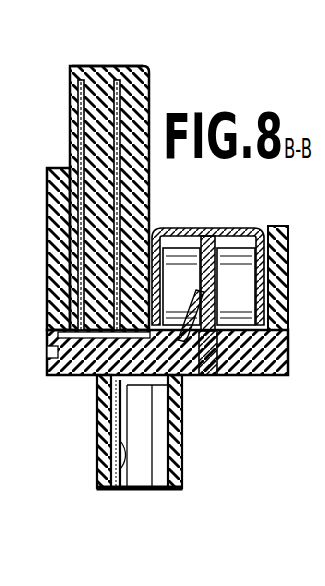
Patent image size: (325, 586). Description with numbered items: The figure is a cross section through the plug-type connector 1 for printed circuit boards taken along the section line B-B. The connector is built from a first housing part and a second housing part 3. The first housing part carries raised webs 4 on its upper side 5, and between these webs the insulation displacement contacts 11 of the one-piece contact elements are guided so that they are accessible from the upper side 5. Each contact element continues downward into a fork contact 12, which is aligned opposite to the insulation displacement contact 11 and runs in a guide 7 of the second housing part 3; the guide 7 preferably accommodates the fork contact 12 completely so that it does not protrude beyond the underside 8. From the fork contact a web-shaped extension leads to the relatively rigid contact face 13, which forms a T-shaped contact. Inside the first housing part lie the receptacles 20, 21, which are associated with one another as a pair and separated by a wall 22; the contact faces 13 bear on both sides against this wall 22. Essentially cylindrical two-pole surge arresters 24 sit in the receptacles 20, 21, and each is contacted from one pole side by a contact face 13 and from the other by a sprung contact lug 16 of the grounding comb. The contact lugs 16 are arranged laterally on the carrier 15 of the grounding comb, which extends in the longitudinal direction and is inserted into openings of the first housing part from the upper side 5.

The plug-type connector 1 is at (40, 214).
The second housing part 3 is at (98, 437).
The raised webs 4 is at (149, 110).
The upper side 5 is at (100, 66).
The guides 7 is at (183, 476).
The underside 8 is at (152, 491).
The insulation displacement contact 11 is at (114, 152).
The fork contact 12 is at (126, 455).
The contact face 13 is at (184, 377).
The carrier 15 is at (208, 232).
The contact lugs 16 is at (262, 375).
The receptacle 20 is at (181, 234).
The receptacle 21 is at (247, 234).
The wall 22 is at (222, 376).
The two-pole surge arrester 24 is at (276, 228).